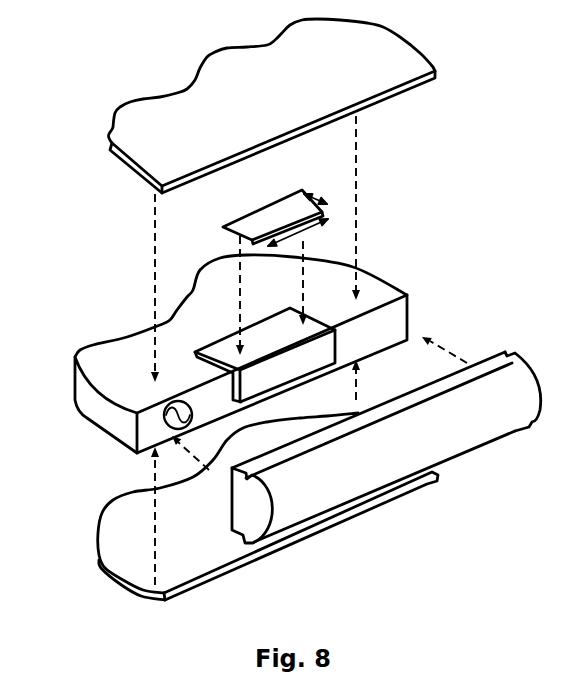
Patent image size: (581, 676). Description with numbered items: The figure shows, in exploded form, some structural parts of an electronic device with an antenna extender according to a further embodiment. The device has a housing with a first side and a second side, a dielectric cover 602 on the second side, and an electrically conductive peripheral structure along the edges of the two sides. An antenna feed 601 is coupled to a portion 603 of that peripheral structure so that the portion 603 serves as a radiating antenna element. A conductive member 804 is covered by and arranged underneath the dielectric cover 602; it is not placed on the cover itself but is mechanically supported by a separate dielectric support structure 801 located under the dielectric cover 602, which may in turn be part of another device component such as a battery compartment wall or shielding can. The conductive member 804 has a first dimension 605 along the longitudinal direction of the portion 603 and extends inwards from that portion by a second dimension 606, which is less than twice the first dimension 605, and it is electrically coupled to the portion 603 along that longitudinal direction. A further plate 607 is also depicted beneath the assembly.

The antenna feed 601 is at (165, 423).
The dielectric cover 602 is at (128, 108).
The portion of the peripheral structure 603 is at (510, 426).
The first dimension 605 is at (303, 233).
The second dimension 606 is at (324, 192).
The bottom plate 607 is at (106, 567).
The dielectric support structure 801 is at (195, 352).
The conductive member 804 is at (223, 224).